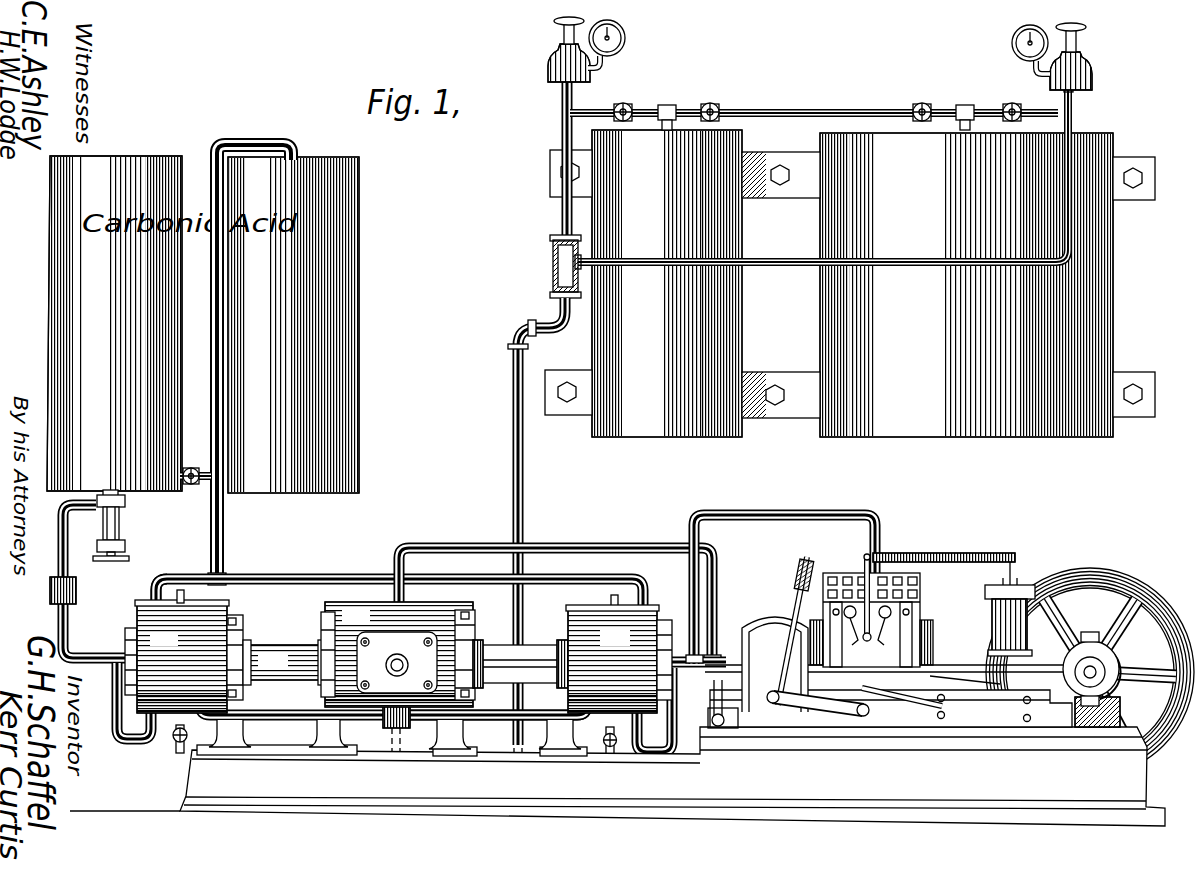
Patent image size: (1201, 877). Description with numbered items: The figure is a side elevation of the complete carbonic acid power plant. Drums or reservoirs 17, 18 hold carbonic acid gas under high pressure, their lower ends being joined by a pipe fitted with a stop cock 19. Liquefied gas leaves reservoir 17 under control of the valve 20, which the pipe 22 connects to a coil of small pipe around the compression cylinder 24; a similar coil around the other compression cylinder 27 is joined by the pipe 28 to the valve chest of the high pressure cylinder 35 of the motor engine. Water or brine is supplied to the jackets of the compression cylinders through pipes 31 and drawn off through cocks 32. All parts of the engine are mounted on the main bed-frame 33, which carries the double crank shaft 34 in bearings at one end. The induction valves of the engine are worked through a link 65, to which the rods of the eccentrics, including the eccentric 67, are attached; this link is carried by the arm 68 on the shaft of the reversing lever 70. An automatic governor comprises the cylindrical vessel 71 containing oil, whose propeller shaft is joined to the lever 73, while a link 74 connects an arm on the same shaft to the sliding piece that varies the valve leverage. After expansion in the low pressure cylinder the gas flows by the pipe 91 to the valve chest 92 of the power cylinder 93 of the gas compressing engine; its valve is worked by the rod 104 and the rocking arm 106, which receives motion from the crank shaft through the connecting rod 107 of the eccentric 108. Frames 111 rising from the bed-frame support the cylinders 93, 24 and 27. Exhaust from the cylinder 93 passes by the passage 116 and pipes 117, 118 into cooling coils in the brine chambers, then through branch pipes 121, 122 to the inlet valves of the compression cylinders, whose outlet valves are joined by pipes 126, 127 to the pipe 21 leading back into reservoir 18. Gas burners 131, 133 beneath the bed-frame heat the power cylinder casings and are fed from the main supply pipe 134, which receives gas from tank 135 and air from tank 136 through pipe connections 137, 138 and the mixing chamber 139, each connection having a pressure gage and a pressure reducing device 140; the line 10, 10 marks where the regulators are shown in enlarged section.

The section line 10 is at (546, 113).
The reservoir 17 is at (114, 327).
The reservoir 18 is at (293, 325).
The stop cock 19 is at (190, 486).
The valve 20 is at (122, 522).
The pipe 21 is at (217, 525).
The pipe 22 is at (60, 625).
The compression cylinder 24 is at (184, 656).
The compression cylinder 27 is at (619, 659).
The pipe 28 is at (790, 513).
The pipes 31 is at (190, 597).
The cocks 32 is at (173, 742).
The main bed-frame 33 is at (617, 776).
The double crank shaft 34 is at (1120, 690).
The high pressure cylinder 35 is at (910, 600).
The link 65 is at (898, 712).
The eccentric 67 is at (1100, 640).
The arm 68 is at (820, 718).
The reversing lever 70 is at (805, 570).
The cylindrical vessel 71 is at (992, 620).
The lever 73 is at (966, 555).
The link 74 is at (865, 570).
The pipe 91 is at (655, 546).
The valve chest 92 is at (418, 648).
The power cylinder 93 is at (398, 654).
The rod 104 is at (515, 660).
The arm 106 is at (716, 700).
The connecting rod 107 is at (958, 690).
The eccentric 108 is at (1073, 683).
The frames 111 is at (478, 738).
The passage 116 is at (393, 726).
The pipe 117 is at (284, 722).
The pipe 118 is at (548, 712).
The branch pipe 121 is at (111, 716).
The branch pipe 122 is at (678, 745).
The pipe 126 is at (160, 575).
The pipe 127 is at (399, 577).
The gas burner 131 is at (868, 740).
The gas burner 133 is at (630, 745).
The main supply pipe 134 is at (522, 486).
The closed tank 135 is at (667, 283).
The closed tank 136 is at (966, 285).
The pipe connection 137 is at (562, 176).
The pipe connection 138 is at (1072, 128).
The mixing chamber 139 is at (544, 266).
The pressure reducing device 140 is at (550, 46).